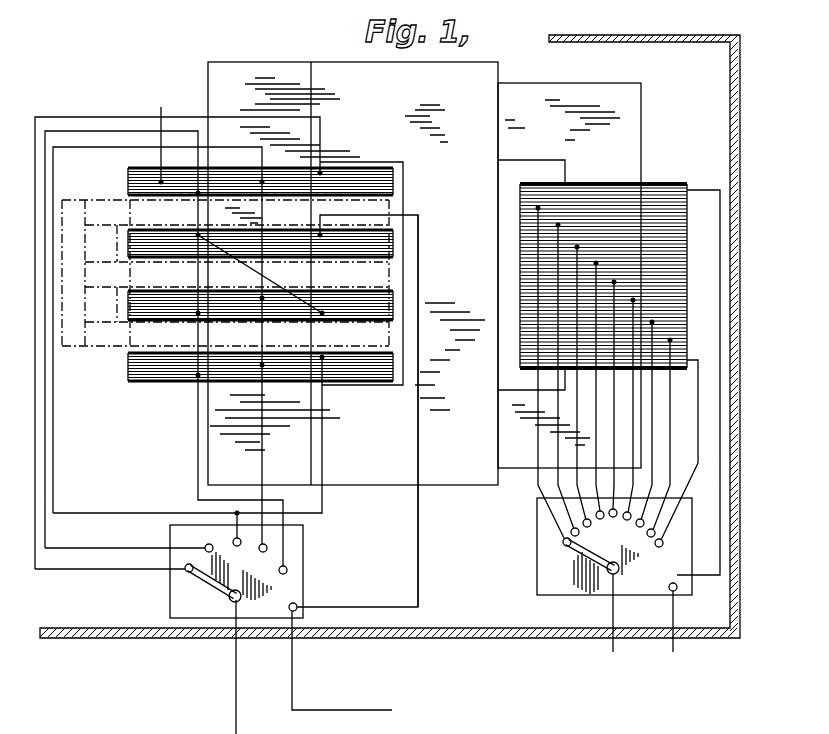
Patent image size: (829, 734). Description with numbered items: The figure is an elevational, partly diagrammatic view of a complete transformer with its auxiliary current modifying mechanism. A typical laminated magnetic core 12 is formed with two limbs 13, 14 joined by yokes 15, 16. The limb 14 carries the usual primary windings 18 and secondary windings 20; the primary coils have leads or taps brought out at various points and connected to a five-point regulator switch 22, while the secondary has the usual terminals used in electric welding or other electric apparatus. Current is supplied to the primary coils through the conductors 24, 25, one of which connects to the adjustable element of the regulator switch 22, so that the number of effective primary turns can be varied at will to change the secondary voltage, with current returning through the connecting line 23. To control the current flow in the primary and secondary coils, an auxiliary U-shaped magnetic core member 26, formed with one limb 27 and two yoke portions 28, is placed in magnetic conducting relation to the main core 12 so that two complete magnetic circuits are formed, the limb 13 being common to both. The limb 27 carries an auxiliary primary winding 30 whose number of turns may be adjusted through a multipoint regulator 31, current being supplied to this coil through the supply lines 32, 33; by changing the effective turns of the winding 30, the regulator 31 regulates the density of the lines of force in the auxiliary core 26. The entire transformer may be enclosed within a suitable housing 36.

The laminated magnetic core 12 is at (317, 59).
The limb 13 is at (445, 257).
The limb 14 is at (243, 338).
The yoke 15 is at (353, 273).
The yoke 16 is at (293, 422).
The primary windings 18 is at (161, 132).
The secondary windings 20 is at (148, 213).
The five-point regulator switch 22 is at (302, 575).
The connecting line 23 is at (418, 522).
The conductor 24 is at (235, 691).
The conductor 25 is at (293, 681).
The auxiliary U-shaped magnetic core member 26 is at (642, 111).
The limb 27 is at (559, 245).
The yoke portions 28 is at (513, 497).
The auxiliary primary winding 30 is at (673, 285).
The multipoint regulator 31 is at (542, 568).
The supply line 32 is at (612, 612).
The supply line 33 is at (678, 615).
The housing 36 is at (738, 59).